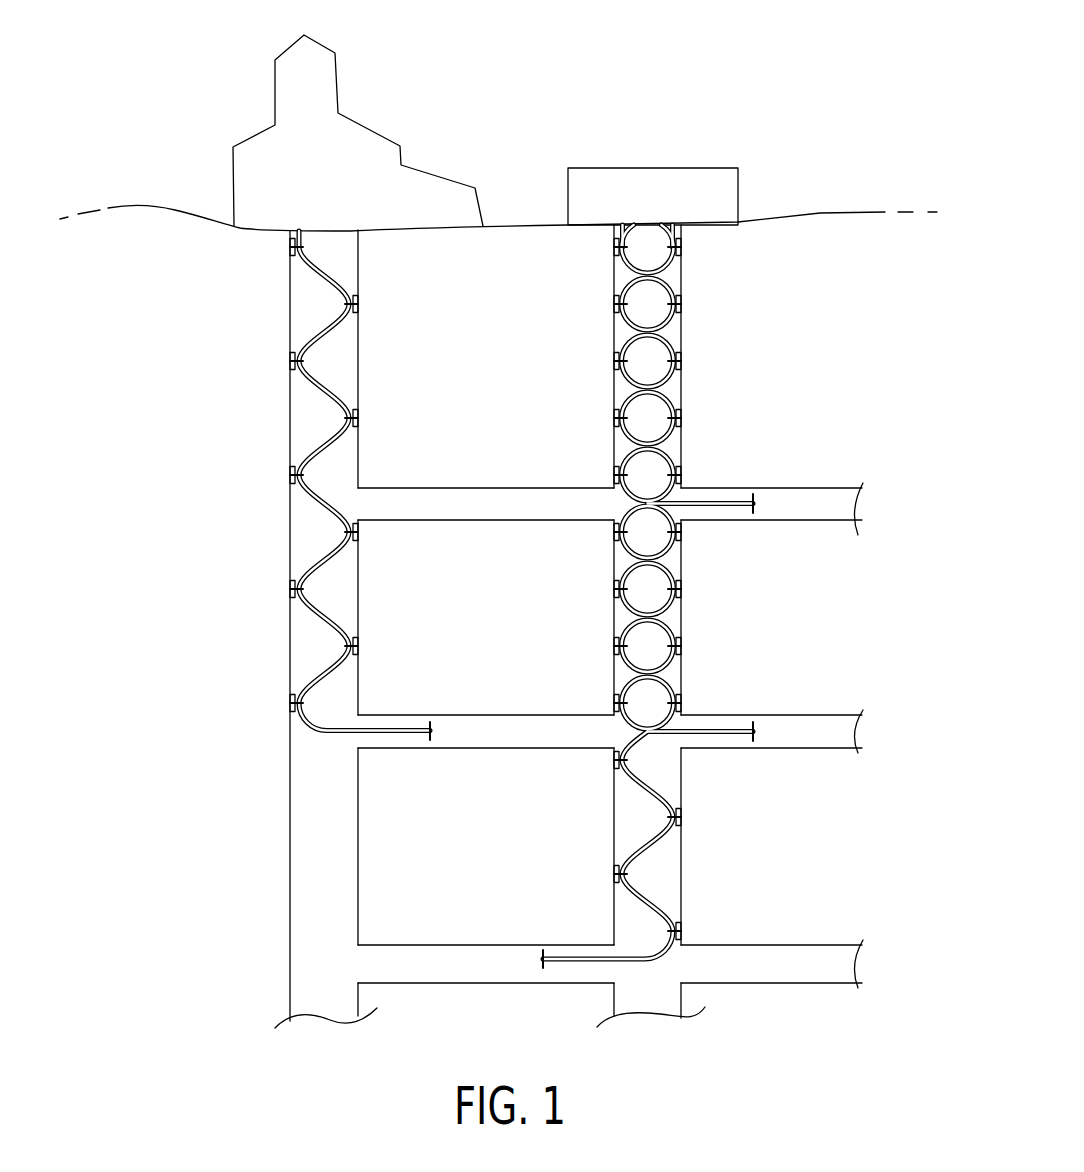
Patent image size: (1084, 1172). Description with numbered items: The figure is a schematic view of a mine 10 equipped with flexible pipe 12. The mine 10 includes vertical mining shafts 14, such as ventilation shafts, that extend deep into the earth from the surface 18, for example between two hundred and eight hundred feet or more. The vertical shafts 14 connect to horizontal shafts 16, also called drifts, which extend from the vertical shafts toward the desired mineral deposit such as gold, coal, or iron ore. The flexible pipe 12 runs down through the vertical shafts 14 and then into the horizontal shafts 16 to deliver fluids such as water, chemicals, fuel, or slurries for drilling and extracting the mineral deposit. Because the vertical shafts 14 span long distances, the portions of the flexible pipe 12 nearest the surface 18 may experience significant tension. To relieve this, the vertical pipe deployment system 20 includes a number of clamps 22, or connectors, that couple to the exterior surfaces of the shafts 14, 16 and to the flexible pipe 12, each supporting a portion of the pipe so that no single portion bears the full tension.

The mine 10 is at (166, 100).
The flexible pipe 12 is at (303, 445).
The vertical mining shafts 14 is at (681, 275).
The horizontal shafts 16 is at (485, 521).
The surface 18 is at (820, 213).
The vertical pipe deployment system 20 is at (166, 389).
The clamps 22 is at (290, 360).